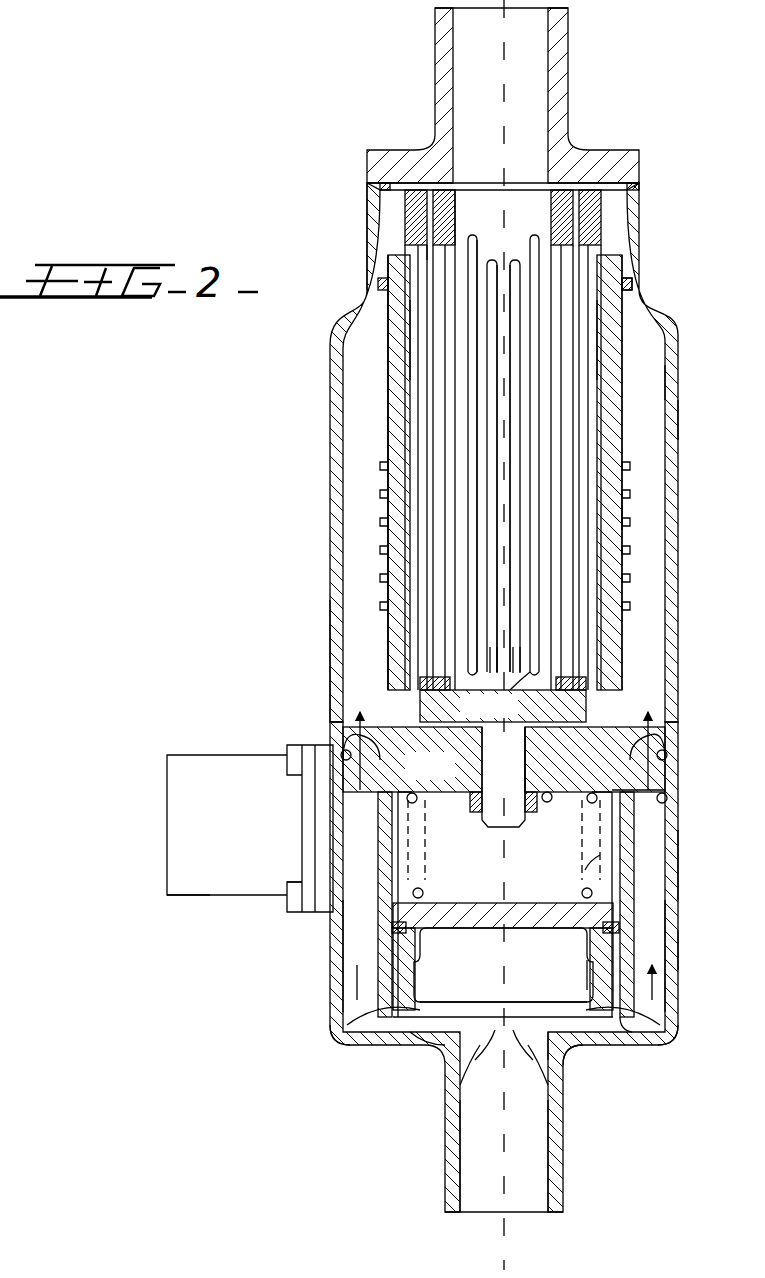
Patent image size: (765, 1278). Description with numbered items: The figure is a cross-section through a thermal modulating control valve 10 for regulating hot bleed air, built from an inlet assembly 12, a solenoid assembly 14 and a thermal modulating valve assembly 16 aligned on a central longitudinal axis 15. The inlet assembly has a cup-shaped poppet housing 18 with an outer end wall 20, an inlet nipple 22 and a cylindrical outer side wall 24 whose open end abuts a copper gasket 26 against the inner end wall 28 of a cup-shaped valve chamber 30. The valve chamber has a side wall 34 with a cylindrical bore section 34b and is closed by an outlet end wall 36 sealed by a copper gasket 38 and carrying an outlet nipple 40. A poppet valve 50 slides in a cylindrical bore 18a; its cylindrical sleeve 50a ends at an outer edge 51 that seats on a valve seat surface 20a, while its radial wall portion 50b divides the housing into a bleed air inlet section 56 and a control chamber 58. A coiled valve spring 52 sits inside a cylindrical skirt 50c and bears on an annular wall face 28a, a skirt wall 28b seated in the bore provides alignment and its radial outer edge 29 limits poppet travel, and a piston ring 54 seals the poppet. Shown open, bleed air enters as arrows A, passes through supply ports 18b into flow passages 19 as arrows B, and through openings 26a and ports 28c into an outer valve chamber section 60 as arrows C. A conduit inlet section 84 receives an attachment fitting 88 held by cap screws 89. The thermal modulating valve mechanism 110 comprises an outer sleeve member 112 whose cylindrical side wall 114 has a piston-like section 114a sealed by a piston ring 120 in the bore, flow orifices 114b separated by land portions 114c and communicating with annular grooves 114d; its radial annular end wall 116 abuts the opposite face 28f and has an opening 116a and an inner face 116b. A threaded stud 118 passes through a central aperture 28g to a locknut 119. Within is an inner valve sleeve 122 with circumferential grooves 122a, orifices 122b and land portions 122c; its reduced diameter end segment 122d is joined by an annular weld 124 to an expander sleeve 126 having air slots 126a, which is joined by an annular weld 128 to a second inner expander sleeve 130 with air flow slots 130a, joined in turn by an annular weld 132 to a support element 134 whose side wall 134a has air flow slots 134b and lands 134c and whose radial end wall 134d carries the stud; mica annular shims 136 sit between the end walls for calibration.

The thermal modulating control valve 10 is at (266, 1097).
The inlet assembly 12 is at (320, 990).
The solenoid assembly 14 is at (165, 828).
The central longitudinal axis 15 is at (504, 1170).
The thermal modulating valve assembly 16 is at (312, 510).
The poppet housing 18 is at (672, 860).
The cylindrical bore 18a is at (408, 1036).
The supply ports 18b is at (360, 1040).
The flow passages 19 is at (347, 935).
The outer end wall 20 is at (598, 1052).
The valve seat surface 20a is at (562, 1050).
The inlet nipple 22 is at (562, 1150).
The outer side wall 24 is at (676, 952).
The gasket 26 is at (668, 790).
The openings 26a is at (344, 806).
The inner end wall 28 is at (442, 780).
The annular wall face 28a is at (552, 795).
The skirt wall 28b is at (636, 832).
The ports 28c is at (342, 750).
The opposite face 28f is at (358, 722).
The central aperture 28g is at (542, 640).
The radial outer edge 29 is at (590, 860).
The valve chamber 30 is at (338, 623).
The side wall 34 is at (334, 425).
The cylindrical bore section 34b is at (380, 215).
The outlet end wall 36 is at (598, 150).
The copper gasket 38 is at (640, 185).
The outlet nipple 40 is at (553, 60).
The poppet valve 50 is at (462, 965).
The cylindrical sleeve 50a is at (580, 985).
The radial wall portion 50b is at (533, 888).
The cylindrical skirt 50c is at (425, 890).
The outer edge 51 is at (626, 1046).
The coiled valve spring 52 is at (595, 806).
The piston ring 54 is at (620, 928).
The bleed air inlet section 56 is at (500, 993).
The control chamber 58 is at (456, 833).
The outer valve chamber section 60 is at (670, 422).
The conduit inlet section 84 is at (320, 834).
The attachment fitting 88 is at (208, 895).
The cap screws 89 is at (290, 905).
The thermal modulating valve mechanism 110 is at (642, 382).
The outer sleeve member 112 is at (630, 510).
The cylindrical side wall 114 is at (408, 682).
The piston-like section 114a is at (602, 256).
The flow orifices 114b is at (394, 581).
The land portion 114c is at (396, 332).
The annular groove 114d is at (392, 467).
The radial annular end wall 116 is at (600, 708).
The opening 116a is at (495, 670).
The inner face 116b is at (602, 682).
The threaded stud 118 is at (518, 780).
The locknut 119 is at (480, 812).
The piston ring 120 is at (628, 282).
The inner valve sleeve 122 is at (398, 390).
The circumferential grooves 122a is at (394, 452).
The orifices 122b is at (394, 494).
The land portions 122c is at (402, 366).
The reduced diameter end segment 122d is at (385, 192).
The annular weld 124 is at (418, 195).
The expander sleeve 126 is at (425, 262).
The air slots 126a is at (405, 240).
The annular weld 128 is at (432, 695).
The second inner expander sleeve 130 is at (386, 283).
The air flow slots 130a is at (456, 238).
The annular weld 132 is at (442, 195).
The support element 134 is at (515, 190).
The side wall 134a is at (470, 235).
The air flow slots 134b is at (490, 262).
The lands 134c is at (497, 333).
The radial end wall 134d is at (512, 719).
The annular shims 136 is at (528, 745).
The arrows A is at (504, 1067).
The arrows B is at (344, 1002).
The arrows C is at (350, 760).